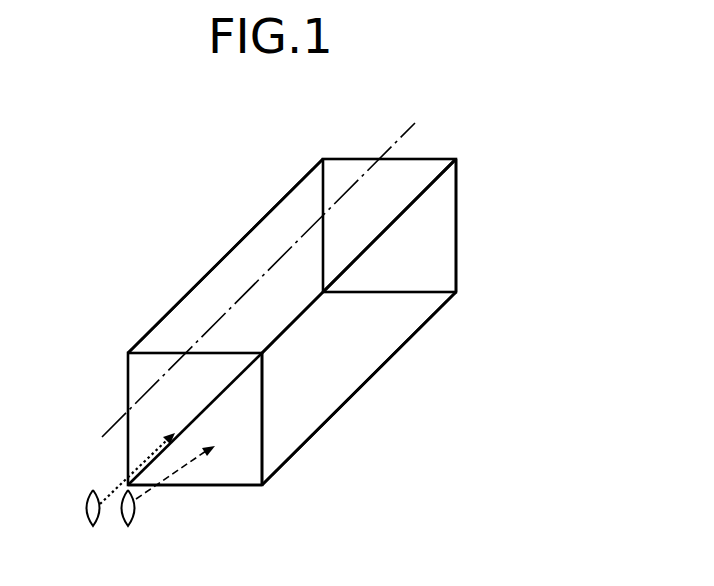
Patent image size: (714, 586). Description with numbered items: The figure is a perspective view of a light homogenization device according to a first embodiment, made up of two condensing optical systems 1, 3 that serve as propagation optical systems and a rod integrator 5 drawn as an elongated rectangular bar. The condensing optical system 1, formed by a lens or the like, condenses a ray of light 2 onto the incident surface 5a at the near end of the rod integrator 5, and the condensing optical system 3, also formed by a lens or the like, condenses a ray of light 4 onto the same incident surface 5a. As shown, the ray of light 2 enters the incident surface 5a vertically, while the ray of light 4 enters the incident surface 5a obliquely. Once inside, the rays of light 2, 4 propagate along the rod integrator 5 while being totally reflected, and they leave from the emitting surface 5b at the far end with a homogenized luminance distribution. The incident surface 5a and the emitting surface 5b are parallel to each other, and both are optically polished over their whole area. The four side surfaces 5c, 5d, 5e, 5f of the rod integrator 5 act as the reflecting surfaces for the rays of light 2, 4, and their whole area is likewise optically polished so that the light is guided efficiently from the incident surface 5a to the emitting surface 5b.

The condensing optical system 1 is at (85, 509).
The ray of light 2 is at (113, 492).
The condensing optical system 3 is at (131, 527).
The ray of light 4 is at (178, 475).
The rod integrator 5 is at (452, 301).
The incident surface 5a is at (240, 468).
The emitting surface 5b is at (432, 240).
The side surface 5c is at (385, 331).
The side surface 5d is at (275, 228).
The side surface 5e is at (205, 297).
The side surface 5f is at (317, 397).